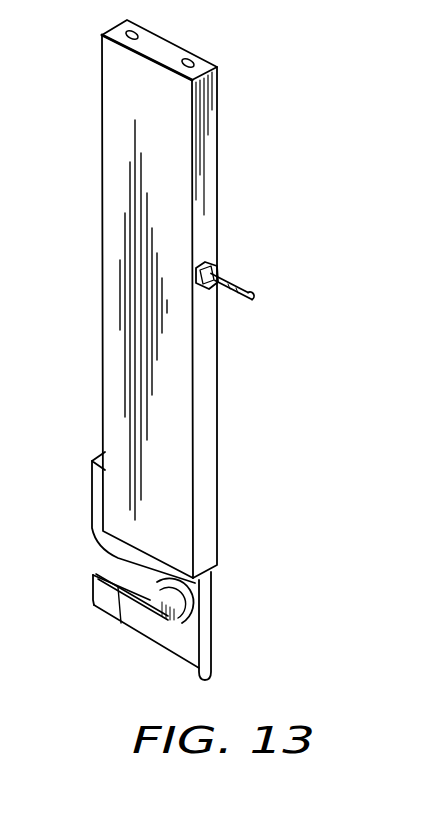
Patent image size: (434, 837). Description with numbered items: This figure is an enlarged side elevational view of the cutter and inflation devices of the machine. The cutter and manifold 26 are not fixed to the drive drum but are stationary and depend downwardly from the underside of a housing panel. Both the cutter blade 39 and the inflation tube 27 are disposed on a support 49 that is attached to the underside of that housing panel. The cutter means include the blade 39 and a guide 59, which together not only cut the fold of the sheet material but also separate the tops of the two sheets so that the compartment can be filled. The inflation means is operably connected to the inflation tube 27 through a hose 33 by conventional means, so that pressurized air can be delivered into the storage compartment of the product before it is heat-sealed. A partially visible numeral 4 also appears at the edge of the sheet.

The support 49 is at (110, 290).
The cutter and manifold 26 is at (82, 403).
The inflation tube 27 is at (212, 647).
The guide 59 is at (97, 596).
The blade 39 is at (177, 615).
The hose 33 is at (233, 290).
The partial numeral 4 is at (7, 641).